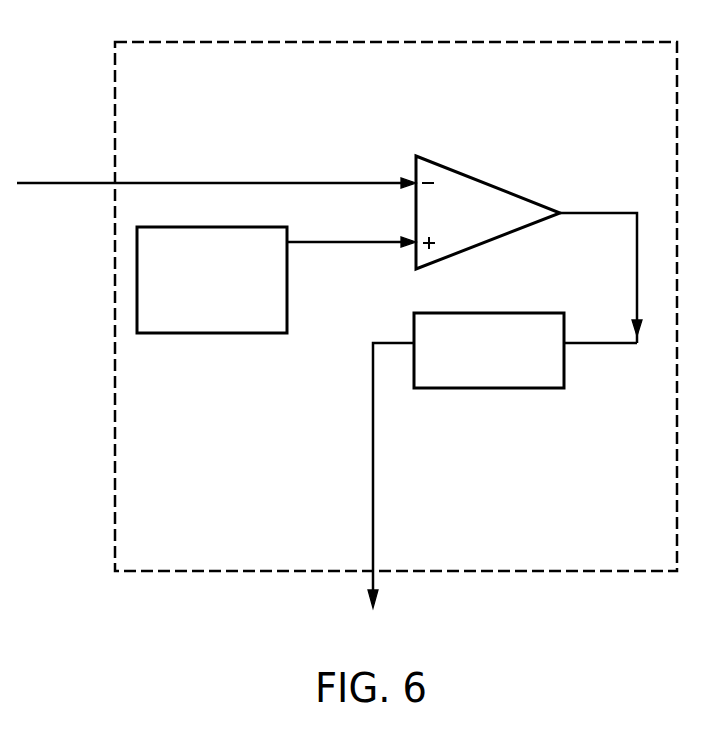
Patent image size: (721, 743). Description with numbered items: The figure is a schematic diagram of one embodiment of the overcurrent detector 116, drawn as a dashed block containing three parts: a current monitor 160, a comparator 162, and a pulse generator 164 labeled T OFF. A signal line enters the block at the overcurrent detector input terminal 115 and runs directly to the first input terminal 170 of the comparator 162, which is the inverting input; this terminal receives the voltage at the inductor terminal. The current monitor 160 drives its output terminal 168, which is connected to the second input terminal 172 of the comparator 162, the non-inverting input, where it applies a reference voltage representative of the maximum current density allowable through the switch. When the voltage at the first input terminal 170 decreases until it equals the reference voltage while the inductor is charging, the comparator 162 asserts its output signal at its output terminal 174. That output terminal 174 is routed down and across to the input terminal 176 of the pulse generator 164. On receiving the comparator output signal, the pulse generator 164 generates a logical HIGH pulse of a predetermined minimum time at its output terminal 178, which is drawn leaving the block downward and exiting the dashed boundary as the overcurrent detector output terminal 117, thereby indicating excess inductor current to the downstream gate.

The overcurrent detector 116 is at (172, 77).
The overcurrent detector input terminal 115 is at (115, 186).
The current monitor 160 is at (233, 322).
The current monitor output terminal 168 is at (287, 245).
The comparator 162 is at (493, 222).
The first input terminal 170 is at (413, 181).
The second input terminal 172 is at (413, 245).
The output terminal 174 is at (562, 213).
The input terminal 176 is at (566, 343).
The pulse generator 164 is at (510, 377).
The output terminal 178 is at (412, 343).
The overcurrent detector output terminal 117 is at (375, 571).